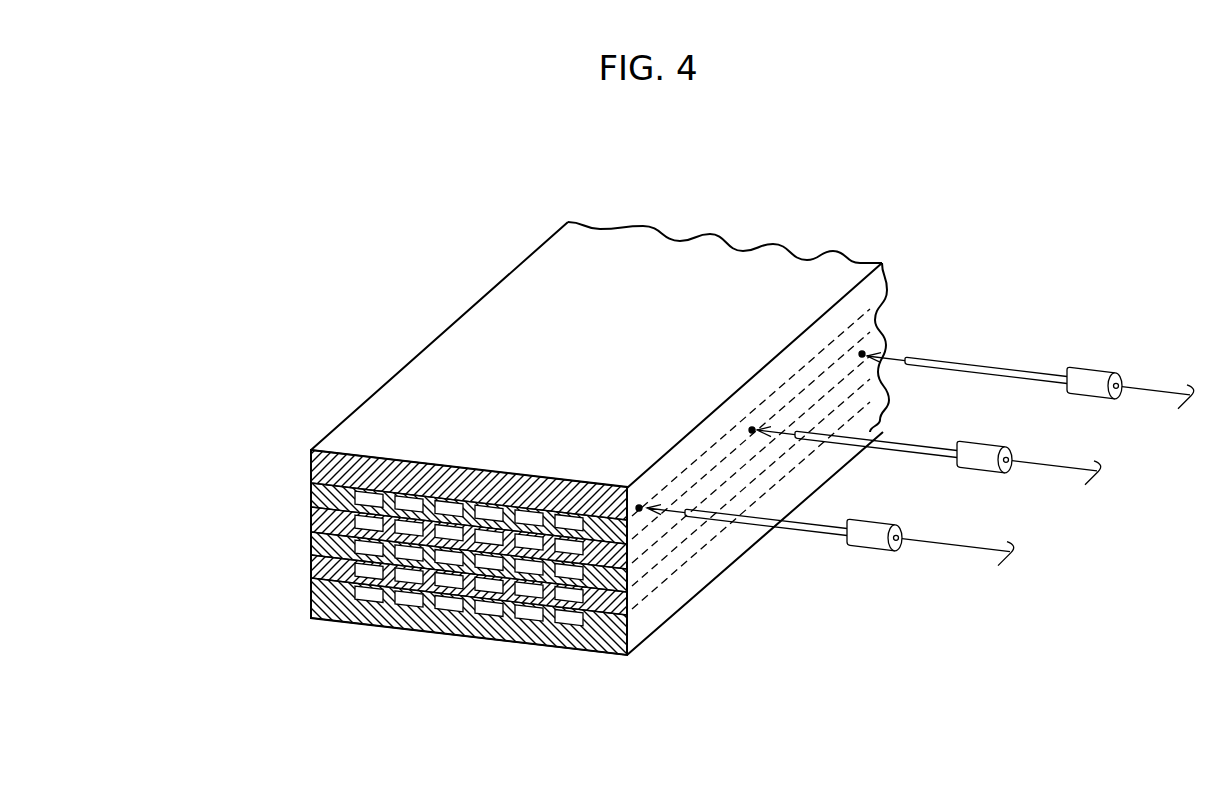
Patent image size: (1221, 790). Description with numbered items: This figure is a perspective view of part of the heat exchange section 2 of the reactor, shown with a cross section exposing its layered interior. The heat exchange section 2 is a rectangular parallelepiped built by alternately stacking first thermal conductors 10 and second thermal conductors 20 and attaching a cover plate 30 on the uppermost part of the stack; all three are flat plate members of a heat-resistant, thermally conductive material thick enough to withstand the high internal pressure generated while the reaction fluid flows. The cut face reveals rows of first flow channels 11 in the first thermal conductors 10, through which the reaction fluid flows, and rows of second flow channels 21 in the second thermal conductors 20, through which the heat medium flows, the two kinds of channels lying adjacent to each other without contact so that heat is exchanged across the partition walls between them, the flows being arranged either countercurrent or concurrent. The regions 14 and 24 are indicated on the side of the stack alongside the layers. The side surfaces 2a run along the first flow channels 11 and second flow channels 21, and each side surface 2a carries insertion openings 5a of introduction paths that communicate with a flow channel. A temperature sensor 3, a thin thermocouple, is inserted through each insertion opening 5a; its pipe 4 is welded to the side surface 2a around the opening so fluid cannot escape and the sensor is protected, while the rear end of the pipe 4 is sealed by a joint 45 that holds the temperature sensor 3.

The heat exchange section 2 is at (524, 218).
The side surface 2a is at (311, 453).
The temperature sensor 3 is at (930, 547).
The pipe 4 is at (800, 533).
The joint 45 is at (863, 548).
The insertion opening 5a is at (638, 505).
The first thermal conductor 10 is at (311, 600).
The first flow channel 11 is at (573, 518).
The first layer side region 14 is at (643, 623).
The second thermal conductor 20 is at (311, 553).
The second flow channel 21 is at (570, 595).
The second layer side region 24 is at (667, 568).
The cover plate 30 is at (311, 524).